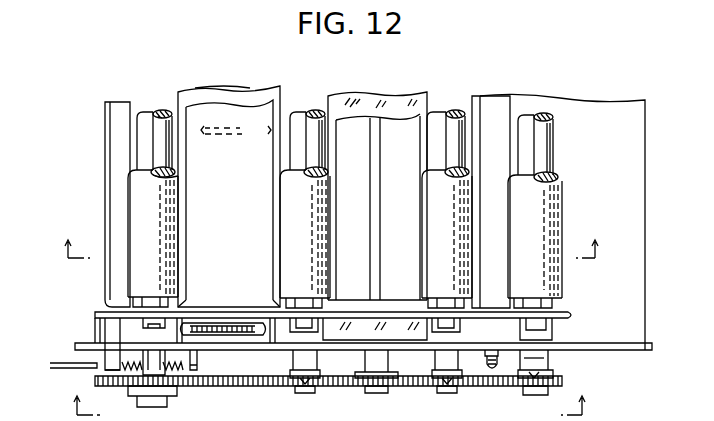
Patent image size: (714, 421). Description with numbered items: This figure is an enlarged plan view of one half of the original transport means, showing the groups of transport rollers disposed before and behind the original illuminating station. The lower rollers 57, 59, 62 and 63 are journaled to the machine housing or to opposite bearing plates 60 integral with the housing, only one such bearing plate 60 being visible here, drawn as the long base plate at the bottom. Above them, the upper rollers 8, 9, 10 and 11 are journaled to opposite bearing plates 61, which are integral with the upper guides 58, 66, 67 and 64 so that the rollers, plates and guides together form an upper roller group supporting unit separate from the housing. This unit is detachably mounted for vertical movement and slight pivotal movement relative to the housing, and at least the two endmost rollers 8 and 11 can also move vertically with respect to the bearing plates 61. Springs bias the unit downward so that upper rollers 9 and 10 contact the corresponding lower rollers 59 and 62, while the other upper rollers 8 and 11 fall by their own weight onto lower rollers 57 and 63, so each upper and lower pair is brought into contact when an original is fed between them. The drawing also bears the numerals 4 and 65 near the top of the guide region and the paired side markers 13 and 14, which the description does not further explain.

The top block 4 is at (368, 100).
The upper roller 8 is at (152, 223).
The upper roller 9 is at (313, 228).
The upper roller 10 is at (458, 216).
The upper roller 11 is at (542, 228).
The section line 13- 13 is at (334, 393).
The section line 14- 14 is at (329, 233).
The lower roller 57 is at (148, 118).
The upper guide 58 is at (118, 134).
The lower roller 59 is at (305, 120).
The bearing plate 60 is at (588, 348).
The bearing plate 61 is at (560, 316).
The lower roller 62 is at (438, 120).
The lower roller 63 is at (530, 123).
The upper guide 64 is at (494, 128).
The top face of block 65 is at (228, 95).
The upper guide 66 is at (242, 216).
The upper guide 67 is at (416, 228).